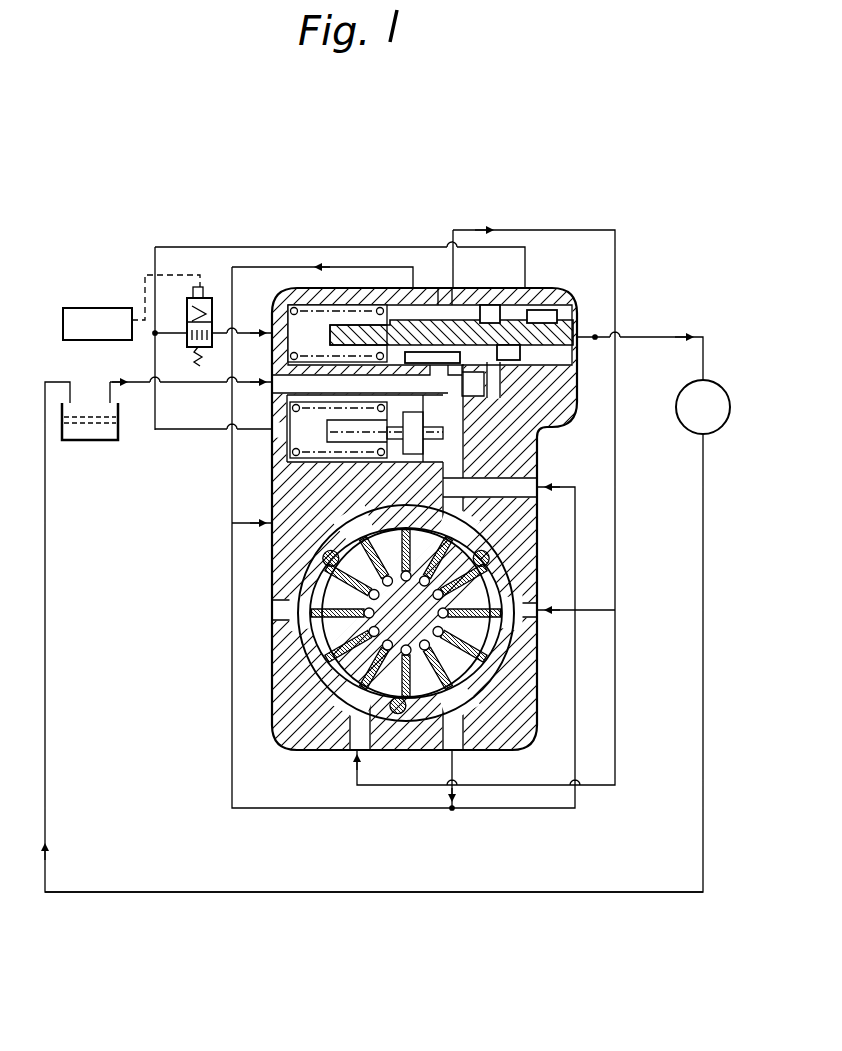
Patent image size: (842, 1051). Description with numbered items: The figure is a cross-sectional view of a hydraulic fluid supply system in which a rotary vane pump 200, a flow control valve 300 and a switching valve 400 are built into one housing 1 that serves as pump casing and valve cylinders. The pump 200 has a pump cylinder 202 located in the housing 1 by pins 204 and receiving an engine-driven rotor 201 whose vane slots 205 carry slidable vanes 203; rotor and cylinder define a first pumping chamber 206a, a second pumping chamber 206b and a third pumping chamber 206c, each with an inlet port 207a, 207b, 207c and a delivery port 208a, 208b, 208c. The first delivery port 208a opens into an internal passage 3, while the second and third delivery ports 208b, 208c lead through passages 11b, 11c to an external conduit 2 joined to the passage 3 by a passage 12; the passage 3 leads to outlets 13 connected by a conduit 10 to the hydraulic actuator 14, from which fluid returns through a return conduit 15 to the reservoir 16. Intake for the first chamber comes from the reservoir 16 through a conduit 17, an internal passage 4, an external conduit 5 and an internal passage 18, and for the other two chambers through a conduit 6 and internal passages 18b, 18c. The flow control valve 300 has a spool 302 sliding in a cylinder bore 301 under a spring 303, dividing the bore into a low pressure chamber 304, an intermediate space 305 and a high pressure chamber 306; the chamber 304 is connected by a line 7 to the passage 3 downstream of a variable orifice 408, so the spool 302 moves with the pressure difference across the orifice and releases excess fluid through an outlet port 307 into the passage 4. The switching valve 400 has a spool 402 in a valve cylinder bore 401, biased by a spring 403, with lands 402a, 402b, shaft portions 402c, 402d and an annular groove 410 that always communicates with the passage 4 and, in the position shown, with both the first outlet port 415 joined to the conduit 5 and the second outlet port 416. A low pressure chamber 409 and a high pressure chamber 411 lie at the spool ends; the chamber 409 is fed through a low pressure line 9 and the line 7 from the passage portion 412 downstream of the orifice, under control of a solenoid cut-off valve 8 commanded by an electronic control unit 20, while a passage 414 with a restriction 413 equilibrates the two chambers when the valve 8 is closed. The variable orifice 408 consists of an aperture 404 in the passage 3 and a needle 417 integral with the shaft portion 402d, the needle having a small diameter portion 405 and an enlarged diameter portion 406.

The housing 1 is at (330, 752).
The conduit 2 is at (555, 810).
The internal passage 3 is at (448, 383).
The internal passage 4 is at (362, 372).
The external conduit 5 is at (183, 245).
The conduit 6 is at (617, 543).
The line 7 is at (372, 300).
The cut-off valve 8 is at (185, 303).
The low pressure line 9 is at (172, 336).
The conduit 10 is at (675, 337).
The passage 11b is at (472, 745).
The passage 11c is at (288, 642).
The passage 12 is at (577, 490).
The outlets 13 is at (597, 335).
The hydraulic actuator 14 is at (712, 434).
The return conduit 15 is at (255, 894).
The fluid reservoir 16 is at (87, 442).
The conduit 17 is at (147, 380).
The internal passage 18 is at (232, 523).
The internal passage 18b is at (616, 610).
The internal passage 18c is at (340, 786).
The electronic control unit 20 is at (87, 307).
The rotary vane pump 200 is at (416, 685).
The rotor 201 is at (358, 738).
The pump cylinder 202 is at (445, 742).
The vanes 203 is at (335, 610).
The pins 204 is at (358, 613).
The vane slots 205 is at (298, 605).
The first pumping chamber 206a is at (540, 520).
The second pumping chamber 206b is at (535, 690).
The third pumping chamber 206c is at (290, 748).
The inlet port 207a is at (320, 562).
The inlet port 207b is at (520, 648).
The inlet port 207c is at (335, 728).
The first delivery port 208a is at (520, 578).
The second delivery port 208b is at (495, 740).
The third delivery port 208c is at (300, 685).
The flow control valve 300 is at (290, 476).
The cylinder bore 301 is at (290, 462).
The spool 302 is at (540, 470).
The spring 303 is at (285, 410).
The low pressure chamber 304 is at (290, 440).
The intermediate space 305 is at (285, 505).
The high pressure chamber 306 is at (553, 430).
The outlet port 307 is at (363, 305).
The switching valve 400 is at (447, 298).
The valve cylinder bore 401 is at (345, 322).
The spool 402 is at (523, 317).
The land 402a is at (492, 312).
The land 402b is at (395, 300).
The shaft portion 402c is at (305, 330).
The shaft portion 402d is at (550, 322).
The spring 403 is at (278, 322).
The orifice 404 is at (553, 408).
The small diameter portion 405 is at (556, 390).
The enlarged diameter portion 406 is at (560, 365).
The variable orifice 408 is at (573, 296).
The low pressure chamber 409 is at (292, 335).
The annular groove 410 is at (411, 298).
The high pressure chamber 411 is at (535, 310).
The passage portion 412 is at (578, 320).
The restriction 413 is at (455, 297).
The passage 414 is at (318, 300).
The first outlet port 415 is at (419, 300).
The second outlet port 416 is at (478, 300).
The needle 417 is at (578, 333).